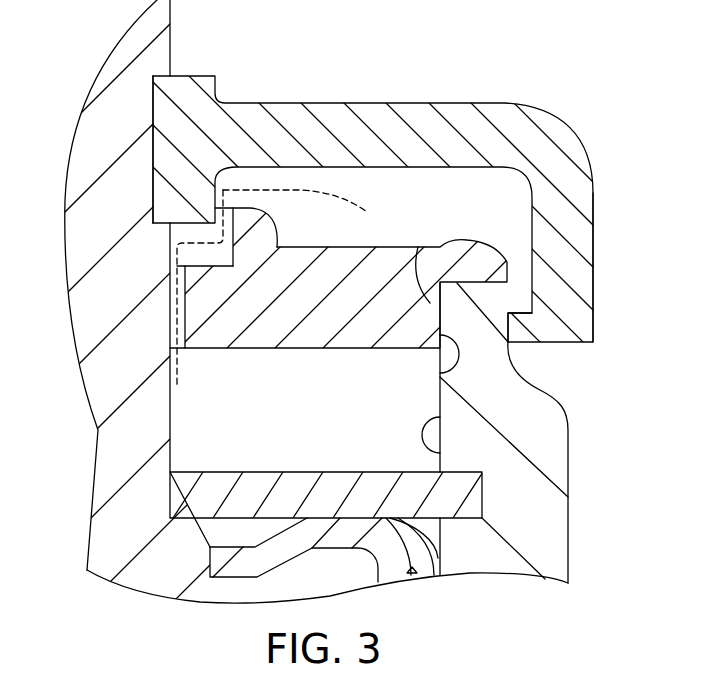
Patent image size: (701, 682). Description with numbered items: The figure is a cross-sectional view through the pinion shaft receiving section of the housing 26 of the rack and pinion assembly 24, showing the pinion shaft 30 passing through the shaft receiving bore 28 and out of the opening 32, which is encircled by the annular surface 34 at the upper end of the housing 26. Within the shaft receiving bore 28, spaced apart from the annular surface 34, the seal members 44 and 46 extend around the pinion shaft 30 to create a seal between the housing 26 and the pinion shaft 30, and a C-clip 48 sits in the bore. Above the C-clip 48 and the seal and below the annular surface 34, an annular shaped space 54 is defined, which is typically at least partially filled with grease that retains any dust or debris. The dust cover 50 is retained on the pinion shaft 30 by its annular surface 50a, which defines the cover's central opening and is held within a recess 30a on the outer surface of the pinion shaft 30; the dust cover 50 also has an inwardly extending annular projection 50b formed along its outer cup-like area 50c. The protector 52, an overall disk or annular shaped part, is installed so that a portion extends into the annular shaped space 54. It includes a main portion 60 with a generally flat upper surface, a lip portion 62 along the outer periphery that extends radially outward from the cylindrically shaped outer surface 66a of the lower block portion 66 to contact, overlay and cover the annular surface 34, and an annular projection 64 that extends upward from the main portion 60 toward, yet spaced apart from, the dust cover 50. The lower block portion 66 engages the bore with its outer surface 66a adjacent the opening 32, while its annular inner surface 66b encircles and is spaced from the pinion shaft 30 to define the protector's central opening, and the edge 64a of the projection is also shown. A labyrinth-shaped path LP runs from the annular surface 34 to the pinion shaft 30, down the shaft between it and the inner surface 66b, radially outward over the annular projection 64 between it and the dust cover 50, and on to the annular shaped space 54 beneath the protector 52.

The rack and pinion assembly 24 is at (494, 60).
The housing 26 is at (537, 427).
The shaft receiving bore 28 is at (441, 448).
The pinion shaft 30 is at (153, 20).
The recess 30a is at (153, 107).
The opening 32 is at (418, 247).
The annular surface 34 is at (472, 283).
The seal member 44 is at (425, 562).
The seal member 46 is at (395, 572).
The C-clip 48 is at (455, 494).
The dust cover 50 is at (397, 137).
The annular surface 50a is at (163, 182).
The inwardly extending annular projection 50b is at (508, 335).
The outer cup-like area 50c is at (562, 308).
The protector 52 is at (293, 348).
The annular shaped space 54 is at (373, 423).
The main portion 60 is at (283, 270).
The lip portion 62 is at (490, 261).
The annular projection 64 is at (247, 222).
The lip edge 64a is at (232, 226).
The lower block portion 66 is at (333, 316).
The cylindrically shaped outer surface 66a is at (440, 377).
The inner surface 66b is at (180, 325).
The labyrinth-shaped path LP is at (177, 303).